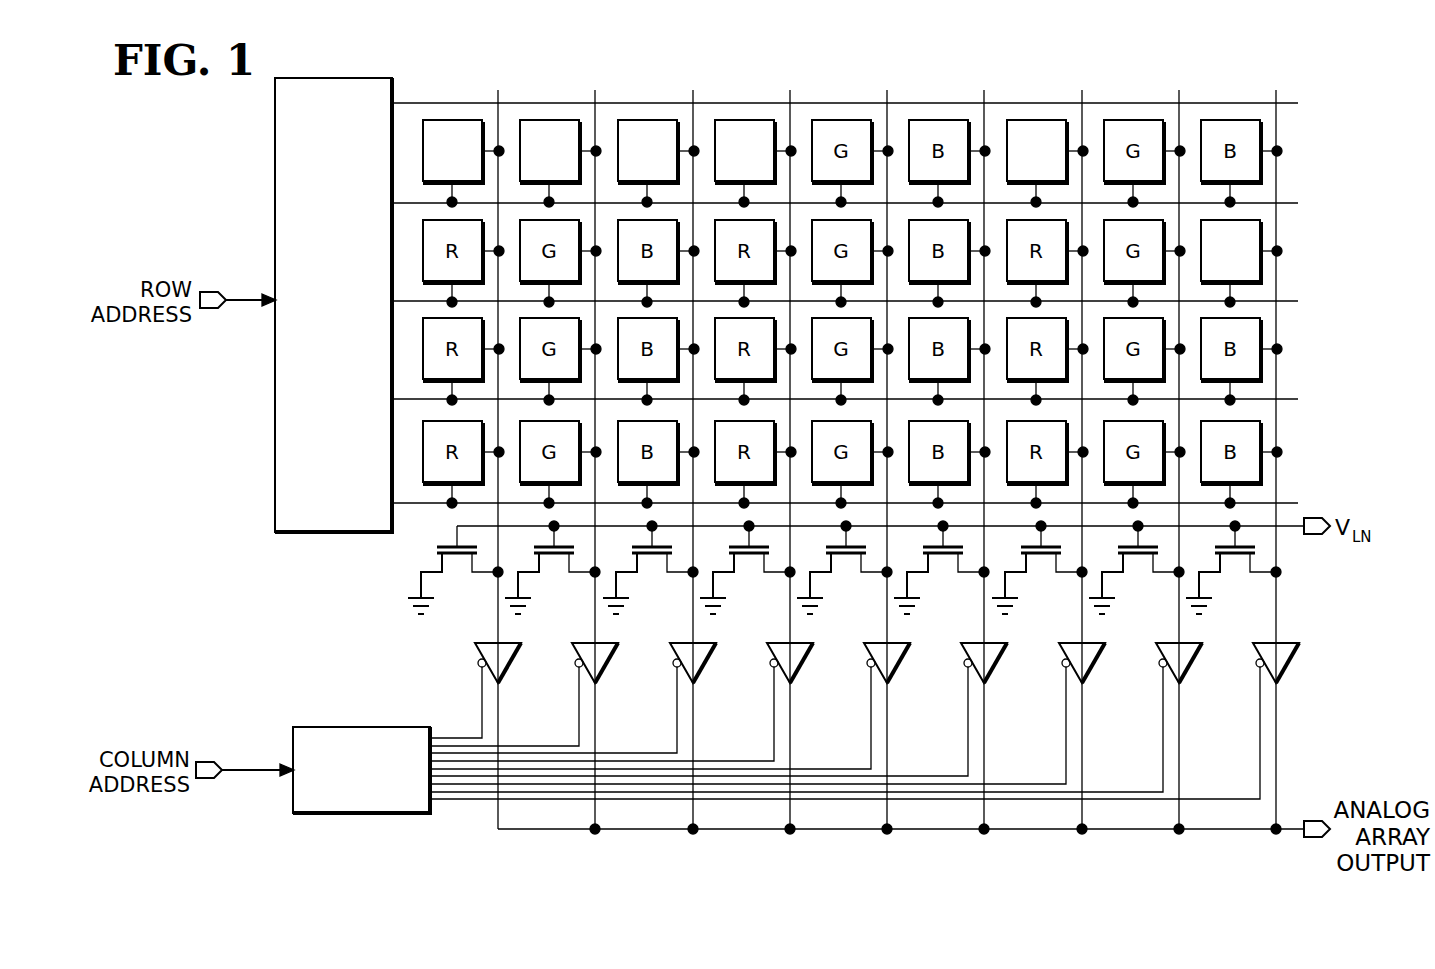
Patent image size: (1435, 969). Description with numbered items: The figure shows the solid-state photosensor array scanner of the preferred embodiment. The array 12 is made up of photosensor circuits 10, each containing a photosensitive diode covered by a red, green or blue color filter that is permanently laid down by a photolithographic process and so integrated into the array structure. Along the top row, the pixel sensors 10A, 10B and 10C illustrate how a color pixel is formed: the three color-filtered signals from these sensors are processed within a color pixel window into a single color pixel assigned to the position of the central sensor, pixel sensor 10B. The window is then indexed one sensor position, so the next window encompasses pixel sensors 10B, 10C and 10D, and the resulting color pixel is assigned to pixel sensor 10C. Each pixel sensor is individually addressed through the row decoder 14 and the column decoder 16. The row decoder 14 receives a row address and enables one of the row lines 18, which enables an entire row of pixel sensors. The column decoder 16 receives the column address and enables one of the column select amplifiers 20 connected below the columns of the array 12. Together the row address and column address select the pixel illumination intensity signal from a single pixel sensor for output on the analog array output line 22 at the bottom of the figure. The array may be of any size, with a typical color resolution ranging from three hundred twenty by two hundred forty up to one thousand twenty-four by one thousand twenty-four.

The photosensor circuit 10 is at (1033, 120).
The pixel sensor 10A is at (448, 120).
The pixel sensor 10B is at (545, 120).
The pixel sensor 10C is at (641, 120).
The pixel sensor 10D is at (838, 120).
The array 12 is at (1243, 72).
The row decoder 14 is at (328, 78).
The column decoder 16 is at (372, 727).
The row lines 18 is at (1298, 103).
The column select amplifiers 20 is at (1335, 667).
The analog array output line 22 is at (1038, 829).